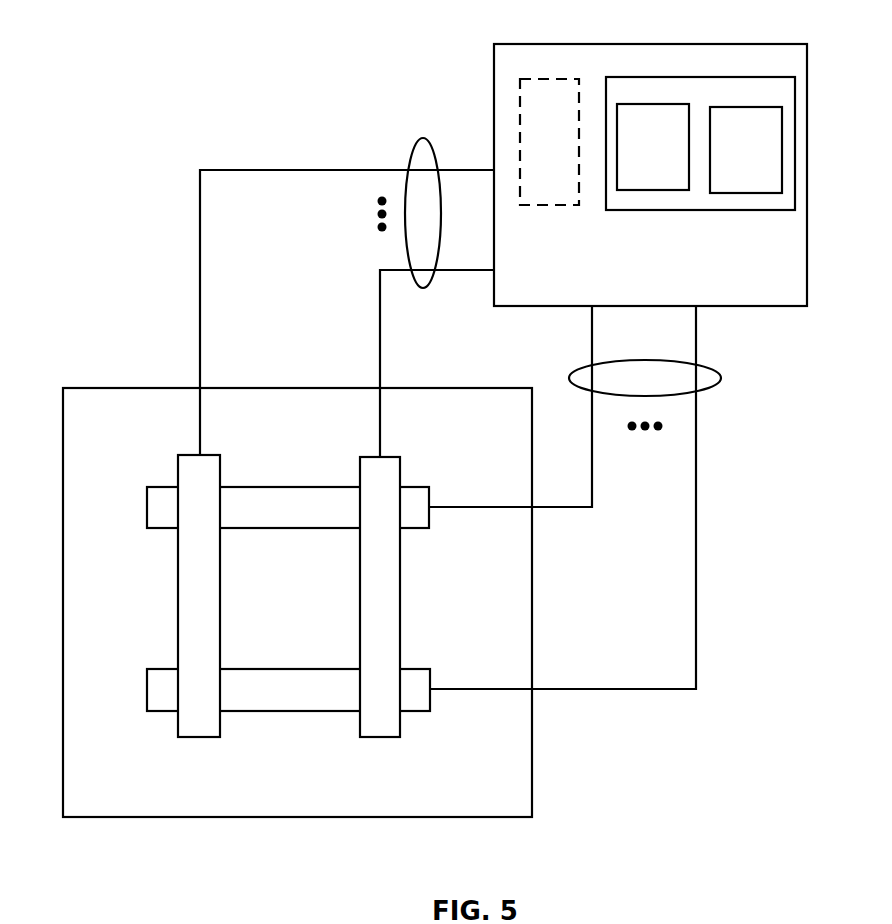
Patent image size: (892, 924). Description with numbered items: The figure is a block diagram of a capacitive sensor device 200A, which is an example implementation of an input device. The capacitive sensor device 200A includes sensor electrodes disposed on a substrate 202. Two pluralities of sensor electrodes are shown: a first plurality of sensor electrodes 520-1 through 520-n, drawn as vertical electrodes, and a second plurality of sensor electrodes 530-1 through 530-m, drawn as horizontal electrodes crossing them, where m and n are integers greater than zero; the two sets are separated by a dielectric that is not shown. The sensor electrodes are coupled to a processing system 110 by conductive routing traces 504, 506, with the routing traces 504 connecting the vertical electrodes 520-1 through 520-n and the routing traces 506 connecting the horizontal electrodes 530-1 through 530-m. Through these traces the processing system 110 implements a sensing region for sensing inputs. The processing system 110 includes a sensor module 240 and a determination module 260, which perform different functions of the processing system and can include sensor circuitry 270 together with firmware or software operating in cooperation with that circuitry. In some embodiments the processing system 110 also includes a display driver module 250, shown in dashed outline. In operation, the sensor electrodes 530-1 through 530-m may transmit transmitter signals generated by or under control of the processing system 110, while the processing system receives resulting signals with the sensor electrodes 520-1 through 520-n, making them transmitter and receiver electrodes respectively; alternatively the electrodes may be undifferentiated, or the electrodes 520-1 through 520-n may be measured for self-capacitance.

The capacitive sensor device 200A is at (166, 84).
The processing system 110 is at (638, 275).
The sensor circuitry 270 is at (693, 79).
The sensor module 240 is at (639, 158).
The determination module 260 is at (731, 160).
The display driver module 250 is at (535, 153).
The conductive routing traces 504 is at (425, 138).
The conductive routing traces 506 is at (722, 376).
The substrate 202 is at (72, 387).
The sensor electrode 520-1 is at (220, 465).
The sensor electrode 520-n is at (445, 458).
The sensor electrode 530-1 is at (420, 530).
The sensor electrode 530-m is at (275, 667).